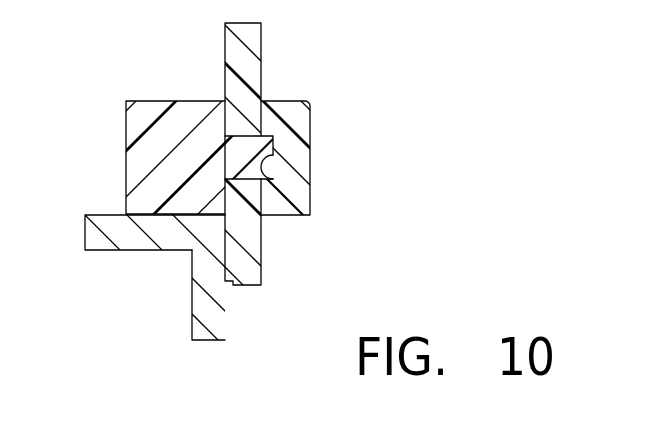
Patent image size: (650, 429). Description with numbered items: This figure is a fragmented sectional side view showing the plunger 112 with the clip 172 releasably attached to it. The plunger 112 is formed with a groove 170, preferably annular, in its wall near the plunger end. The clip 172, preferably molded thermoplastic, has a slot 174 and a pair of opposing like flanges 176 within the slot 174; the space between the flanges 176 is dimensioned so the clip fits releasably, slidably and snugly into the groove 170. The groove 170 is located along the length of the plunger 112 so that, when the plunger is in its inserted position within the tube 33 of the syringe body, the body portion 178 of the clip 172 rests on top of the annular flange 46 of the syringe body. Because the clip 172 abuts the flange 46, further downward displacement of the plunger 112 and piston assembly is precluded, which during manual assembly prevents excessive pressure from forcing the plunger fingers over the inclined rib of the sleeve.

The clip 172 is at (208, 123).
The body portion 178 is at (140, 152).
The flanges 176 is at (248, 147).
The slot 174 is at (280, 137).
The groove 170 is at (270, 160).
The plunger 112 is at (252, 275).
The annular flange 46 is at (143, 237).
The tube 33 is at (192, 329).